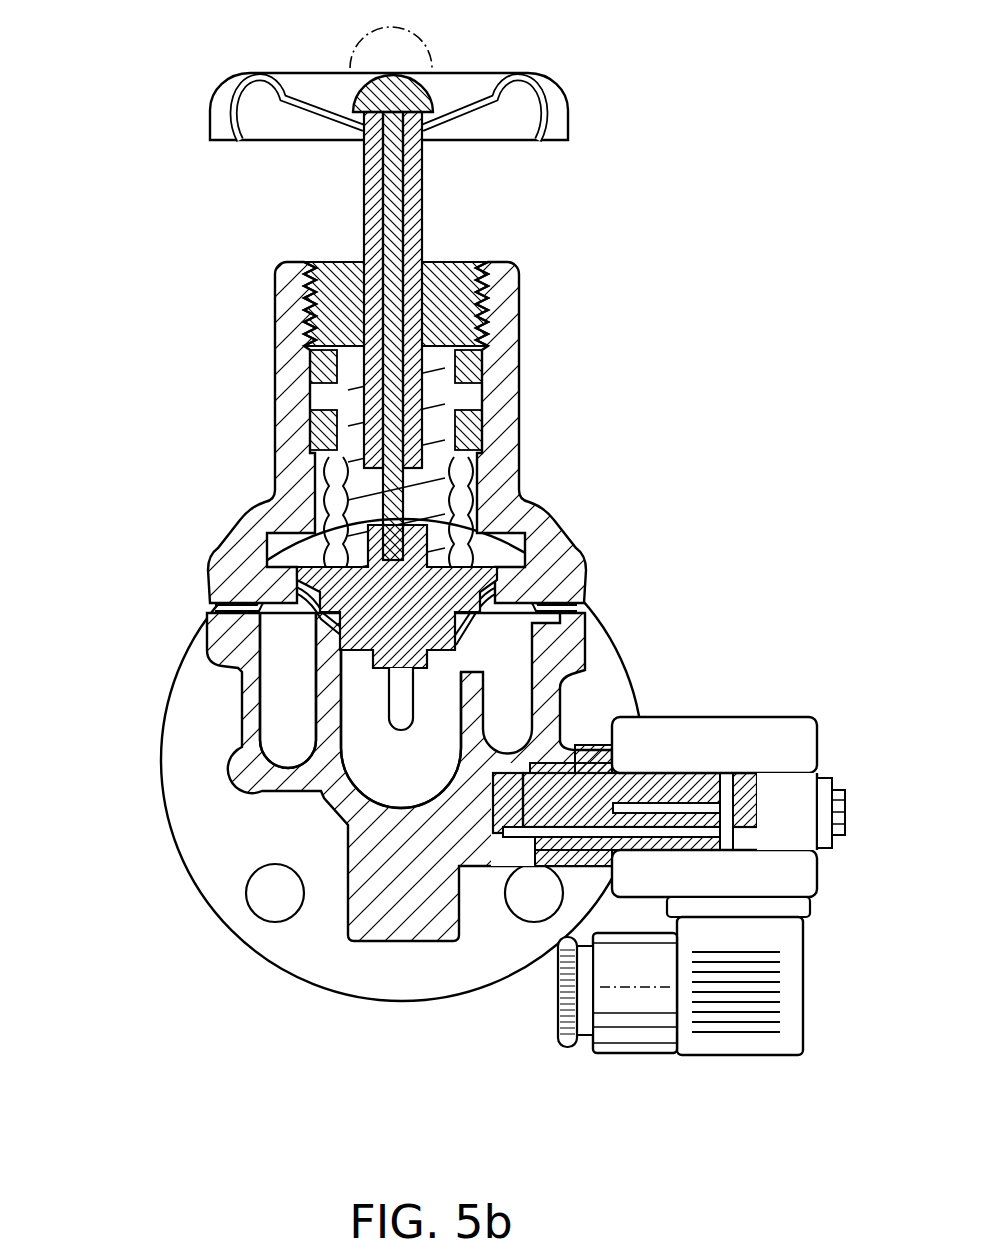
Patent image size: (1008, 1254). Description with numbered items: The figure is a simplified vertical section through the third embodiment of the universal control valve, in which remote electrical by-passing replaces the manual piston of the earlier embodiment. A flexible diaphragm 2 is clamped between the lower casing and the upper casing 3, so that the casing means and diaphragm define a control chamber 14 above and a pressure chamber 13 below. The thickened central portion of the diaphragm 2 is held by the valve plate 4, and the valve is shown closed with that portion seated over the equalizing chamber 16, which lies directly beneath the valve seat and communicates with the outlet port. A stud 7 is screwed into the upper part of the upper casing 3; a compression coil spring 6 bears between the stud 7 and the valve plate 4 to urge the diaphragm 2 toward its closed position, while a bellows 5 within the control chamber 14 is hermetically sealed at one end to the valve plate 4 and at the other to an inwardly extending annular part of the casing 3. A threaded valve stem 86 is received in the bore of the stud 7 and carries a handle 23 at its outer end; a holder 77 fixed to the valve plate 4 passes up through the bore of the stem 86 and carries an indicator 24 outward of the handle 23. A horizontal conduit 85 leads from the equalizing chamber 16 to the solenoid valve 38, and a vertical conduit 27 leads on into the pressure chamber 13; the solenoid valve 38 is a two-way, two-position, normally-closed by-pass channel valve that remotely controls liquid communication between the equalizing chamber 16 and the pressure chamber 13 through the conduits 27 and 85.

The flexible diaphragm 2 is at (545, 638).
The upper casing 3 is at (497, 350).
The valve plate 4 is at (527, 578).
The bellows 5 is at (480, 486).
The compression coil spring 6 is at (425, 400).
The stud 7 is at (445, 320).
The pressure chamber 13 is at (285, 676).
The control chamber 14 is at (505, 550).
The equalizing chamber 16 is at (368, 774).
The handle 23 is at (555, 97).
The indicator 24 is at (425, 100).
The vertical conduit 27 is at (513, 750).
The solenoid valve 38 is at (735, 874).
The holder 77 is at (396, 195).
The horizontal conduit 85 is at (474, 812).
The threaded valve stem 86 is at (364, 186).